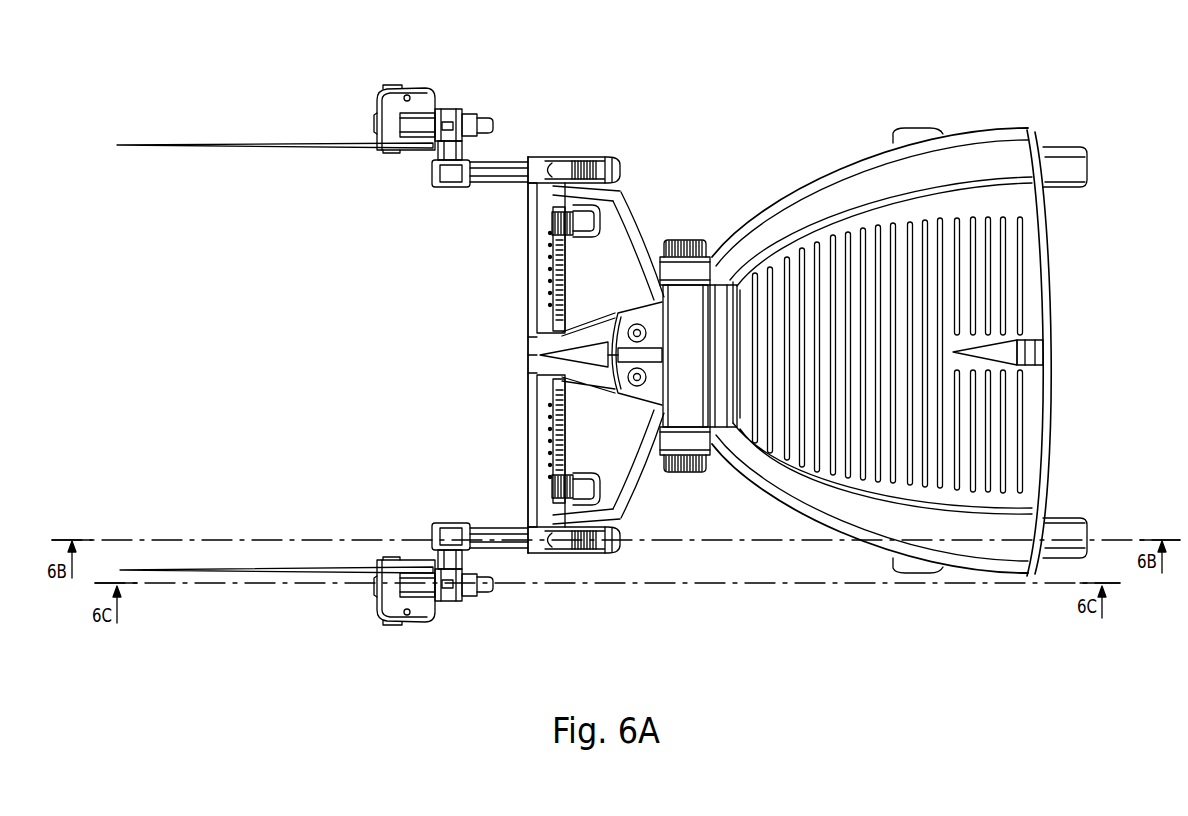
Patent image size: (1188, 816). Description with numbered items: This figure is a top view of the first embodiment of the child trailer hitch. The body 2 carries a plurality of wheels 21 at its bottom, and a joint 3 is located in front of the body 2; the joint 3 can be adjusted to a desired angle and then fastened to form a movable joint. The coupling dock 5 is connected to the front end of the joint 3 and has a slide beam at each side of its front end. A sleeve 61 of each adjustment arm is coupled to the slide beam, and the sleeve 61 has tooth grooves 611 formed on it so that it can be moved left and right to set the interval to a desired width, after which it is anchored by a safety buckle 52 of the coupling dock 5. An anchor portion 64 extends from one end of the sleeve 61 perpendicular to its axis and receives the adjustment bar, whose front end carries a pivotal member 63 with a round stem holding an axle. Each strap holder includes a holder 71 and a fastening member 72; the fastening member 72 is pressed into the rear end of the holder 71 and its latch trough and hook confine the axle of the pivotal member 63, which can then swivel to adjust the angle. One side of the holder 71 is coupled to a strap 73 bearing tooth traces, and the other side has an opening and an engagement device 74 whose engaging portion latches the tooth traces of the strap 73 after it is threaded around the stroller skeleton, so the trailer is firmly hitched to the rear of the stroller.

The body 2 is at (865, 193).
The wheels 21 is at (1065, 167).
The joint 3 is at (685, 310).
The coupling dock 5 is at (597, 293).
The safety buckle 52 is at (577, 212).
The sleeve 61 is at (537, 257).
The tooth grooves 611 is at (553, 297).
The pivotal member 63 is at (443, 182).
The anchor portion 64 is at (592, 167).
The holder 71 is at (388, 108).
The fastening member 72 is at (492, 117).
The strap 73 is at (215, 143).
The engagement device 74 is at (392, 87).